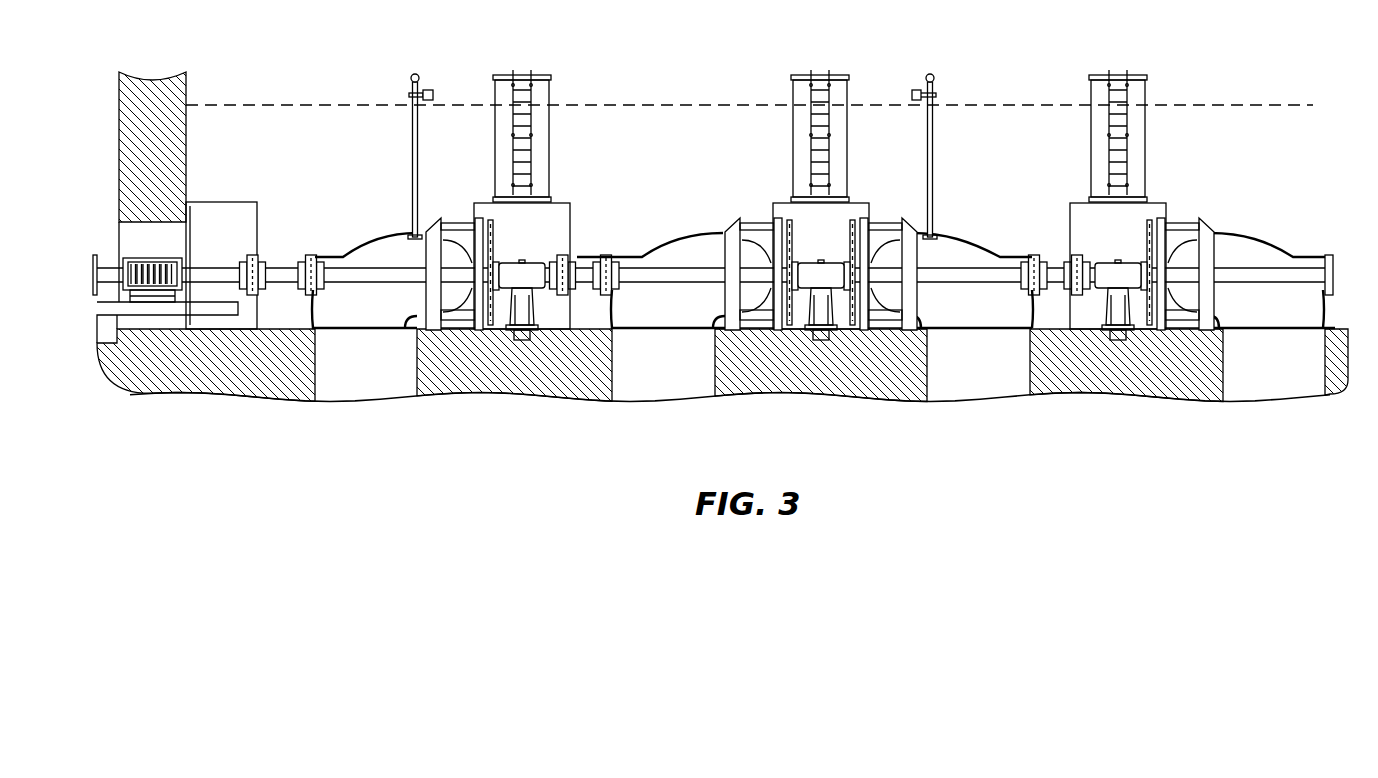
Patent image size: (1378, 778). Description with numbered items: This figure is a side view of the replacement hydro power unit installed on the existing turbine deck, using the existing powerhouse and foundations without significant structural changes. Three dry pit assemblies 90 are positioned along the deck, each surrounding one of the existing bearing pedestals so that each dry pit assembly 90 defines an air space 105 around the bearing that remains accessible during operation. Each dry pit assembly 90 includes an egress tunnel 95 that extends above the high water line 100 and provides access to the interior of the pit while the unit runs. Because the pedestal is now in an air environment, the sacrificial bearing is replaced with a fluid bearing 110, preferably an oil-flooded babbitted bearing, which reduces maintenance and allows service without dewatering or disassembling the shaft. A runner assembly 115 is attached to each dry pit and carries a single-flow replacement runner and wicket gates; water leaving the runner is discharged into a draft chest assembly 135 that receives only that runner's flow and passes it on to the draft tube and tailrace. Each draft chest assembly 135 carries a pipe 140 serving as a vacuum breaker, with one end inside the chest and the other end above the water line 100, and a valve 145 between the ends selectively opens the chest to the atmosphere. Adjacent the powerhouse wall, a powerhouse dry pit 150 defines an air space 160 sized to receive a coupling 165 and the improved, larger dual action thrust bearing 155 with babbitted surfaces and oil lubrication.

The dry pit assembly 90 is at (565, 192).
The egress tunnel 95 is at (548, 122).
The high water line 100 is at (1275, 105).
The air space 105 is at (552, 242).
The fluid bearing 110 is at (520, 270).
The runner assembly 115 is at (462, 312).
The draft chest assembly 135 is at (368, 252).
The pipe 140 is at (410, 132).
The valve 145 is at (425, 90).
The powerhouse dry pit 150 is at (208, 202).
The thrust bearing 155 is at (165, 258).
The air space 160 is at (232, 232).
The coupling 165 is at (250, 252).